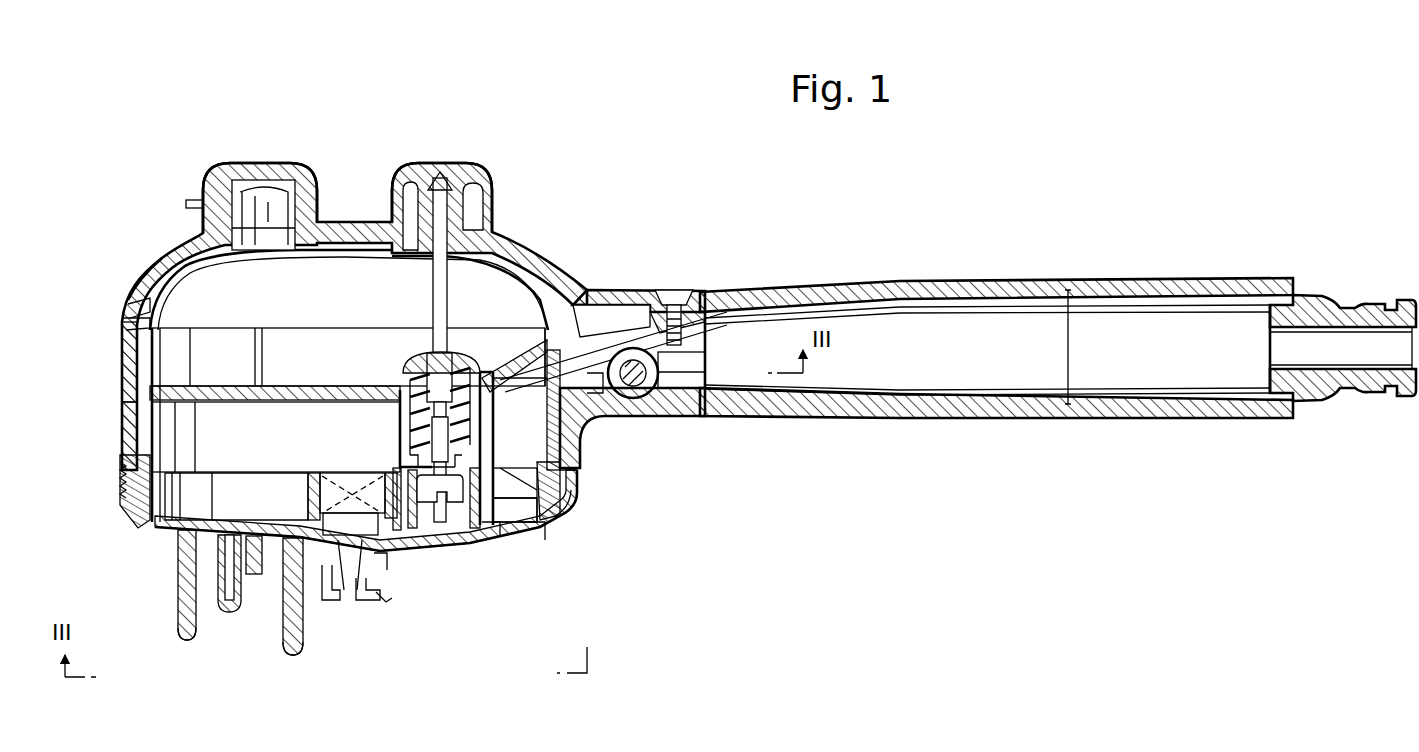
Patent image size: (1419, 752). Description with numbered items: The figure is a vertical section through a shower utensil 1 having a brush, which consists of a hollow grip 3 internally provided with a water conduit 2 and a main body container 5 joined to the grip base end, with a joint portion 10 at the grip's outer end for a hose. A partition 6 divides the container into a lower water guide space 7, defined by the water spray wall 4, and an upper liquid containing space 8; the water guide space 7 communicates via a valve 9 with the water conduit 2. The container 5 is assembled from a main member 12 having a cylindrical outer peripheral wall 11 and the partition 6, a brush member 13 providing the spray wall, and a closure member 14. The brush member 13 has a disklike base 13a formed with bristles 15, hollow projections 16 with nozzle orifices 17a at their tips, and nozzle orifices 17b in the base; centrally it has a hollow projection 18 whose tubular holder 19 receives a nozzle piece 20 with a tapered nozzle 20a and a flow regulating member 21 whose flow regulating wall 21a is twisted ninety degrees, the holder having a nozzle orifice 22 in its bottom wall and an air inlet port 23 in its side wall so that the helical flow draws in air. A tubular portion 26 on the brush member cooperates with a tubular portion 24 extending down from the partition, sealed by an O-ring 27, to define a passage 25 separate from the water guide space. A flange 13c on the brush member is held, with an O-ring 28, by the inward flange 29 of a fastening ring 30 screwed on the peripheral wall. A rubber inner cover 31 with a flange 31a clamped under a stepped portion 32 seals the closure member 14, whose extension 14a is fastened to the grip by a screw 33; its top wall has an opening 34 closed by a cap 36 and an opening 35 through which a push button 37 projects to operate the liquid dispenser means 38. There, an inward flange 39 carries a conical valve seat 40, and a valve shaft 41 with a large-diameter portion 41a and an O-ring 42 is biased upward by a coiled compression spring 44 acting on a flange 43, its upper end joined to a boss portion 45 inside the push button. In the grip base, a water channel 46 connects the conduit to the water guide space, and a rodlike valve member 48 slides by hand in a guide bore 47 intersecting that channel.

The shower utensil 1 is at (605, 265).
The water conduit 2 is at (940, 310).
The grip 3 is at (895, 285).
The water spray wall 4 is at (505, 535).
The main body container 5 is at (152, 258).
The partition 6 is at (272, 386).
The lower water guide space 7 is at (260, 463).
The upper liquid containing space 8 is at (268, 310).
The valve 9 is at (633, 398).
The joint portion 10 is at (1348, 304).
The outer peripheral wall 11 is at (122, 410).
The main member 12 is at (120, 357).
The brush member 13 is at (162, 535).
The base 13a is at (266, 576).
The flange 13c is at (570, 522).
The closure member 14 is at (190, 236).
The extension 14a is at (650, 290).
The bristles 15 is at (186, 642).
The hollow projections 16 is at (226, 585).
The nozzle orifice 17a is at (237, 615).
The nozzle orifices 17b is at (190, 568).
The hollow projection 18 is at (386, 600).
The tubular holder 19 is at (385, 556).
The nozzle piece 20 is at (315, 520).
The nozzle 20a is at (350, 595).
The flow regulating member 21 is at (330, 478).
The flow regulating wall 21a is at (348, 472).
The nozzle orifice 22 is at (365, 600).
The air inlet port 23 is at (324, 580).
The tubular portion 24 is at (494, 428).
The passage 25 is at (470, 535).
The tubular portion 26 is at (532, 528).
The O-ring 27 is at (492, 545).
The O-ring 28 is at (578, 493).
The inward flange 29 is at (135, 530).
The fastening ring 30 is at (580, 505).
The inner cover 31 is at (366, 222).
The flange 31a is at (124, 318).
The stepped portion 32 is at (140, 304).
The screw 33 is at (690, 292).
The opening 34 is at (240, 180).
The opening 35 is at (490, 212).
The cap 36 is at (282, 168).
The push button 37 is at (474, 178).
The liquid dispenser means 38 is at (395, 374).
The inward flange 39 is at (494, 452).
The valve seat 40 is at (432, 545).
The valve shaft 41 is at (433, 292).
The large-diameter portion 41a is at (452, 528).
The O-ring 42 is at (515, 489).
The flange 43 is at (470, 345).
The coiled compression spring 44 is at (494, 408).
The boss portion 45 is at (411, 182).
The water channel 46 is at (700, 405).
The guide bore 47 is at (660, 400).
The valve member 48 is at (620, 398).